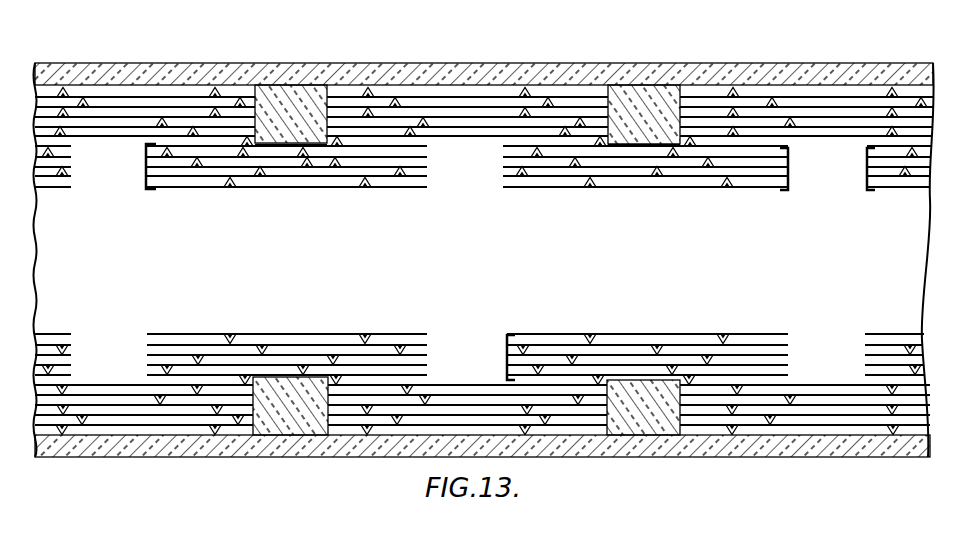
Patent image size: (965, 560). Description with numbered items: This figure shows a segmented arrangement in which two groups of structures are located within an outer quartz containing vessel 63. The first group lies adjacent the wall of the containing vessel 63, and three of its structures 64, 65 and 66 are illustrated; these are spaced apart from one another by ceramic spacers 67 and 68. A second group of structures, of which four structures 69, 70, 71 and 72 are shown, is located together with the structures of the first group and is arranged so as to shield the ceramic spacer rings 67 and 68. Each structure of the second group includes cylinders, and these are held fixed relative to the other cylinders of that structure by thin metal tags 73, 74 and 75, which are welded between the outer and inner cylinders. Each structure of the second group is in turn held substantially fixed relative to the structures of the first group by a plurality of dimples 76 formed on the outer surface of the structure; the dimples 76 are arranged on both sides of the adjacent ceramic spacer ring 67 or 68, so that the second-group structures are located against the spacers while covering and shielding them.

The outer quartz containing vessel 63 is at (475, 79).
The structure of the first group 64 is at (188, 112).
The structure of the first group 65 is at (565, 112).
The structure of the first group 66 is at (820, 125).
The ceramic spacer 67 is at (303, 417).
The ceramic spacer 68 is at (660, 415).
The structure of the second group 69 is at (43, 342).
The structure of the second group 70 is at (390, 343).
The structure of the second group 71 is at (640, 343).
The structure of the second group 72 is at (892, 340).
The thin metal tag 73 is at (143, 183).
The thin metal tag 74 is at (507, 337).
The thin metal tag 75 is at (863, 178).
The dimple 76 is at (332, 147).